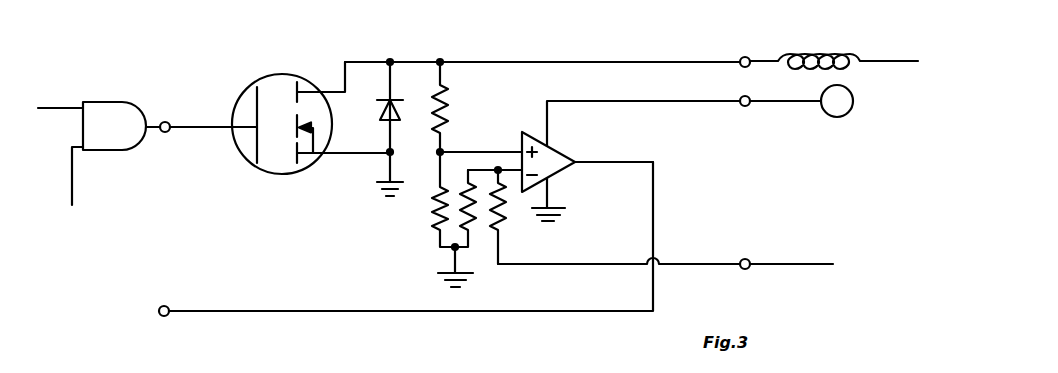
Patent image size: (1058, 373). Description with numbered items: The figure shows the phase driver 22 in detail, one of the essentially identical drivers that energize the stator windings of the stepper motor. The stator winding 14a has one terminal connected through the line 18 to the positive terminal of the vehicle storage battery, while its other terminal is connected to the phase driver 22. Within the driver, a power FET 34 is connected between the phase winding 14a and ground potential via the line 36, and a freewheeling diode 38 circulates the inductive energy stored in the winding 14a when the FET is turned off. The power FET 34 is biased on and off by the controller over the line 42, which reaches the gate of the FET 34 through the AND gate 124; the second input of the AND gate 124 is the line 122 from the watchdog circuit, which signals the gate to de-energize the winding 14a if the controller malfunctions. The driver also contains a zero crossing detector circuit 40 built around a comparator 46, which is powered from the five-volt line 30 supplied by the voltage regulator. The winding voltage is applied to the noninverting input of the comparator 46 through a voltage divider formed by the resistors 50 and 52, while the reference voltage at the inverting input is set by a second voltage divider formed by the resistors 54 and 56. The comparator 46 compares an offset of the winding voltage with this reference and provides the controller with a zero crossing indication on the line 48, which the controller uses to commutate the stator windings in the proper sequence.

The stator winding 14a is at (817, 47).
The line 18 is at (800, 264).
The phase driver 22 is at (224, 64).
The line 30 is at (787, 101).
The power FET 34 is at (300, 76).
The line 36 is at (589, 62).
The freewheeling diode 38 is at (402, 117).
The zero crossing detector circuit 40 is at (672, 169).
The line 42 is at (67, 108).
The comparator 46 is at (558, 154).
The line 48 is at (262, 311).
The resistor 50 is at (445, 110).
The resistor 52 is at (433, 226).
The resistor 54 is at (503, 222).
The resistor 56 is at (480, 224).
The line 122 is at (72, 187).
The AND gate 124 is at (140, 110).